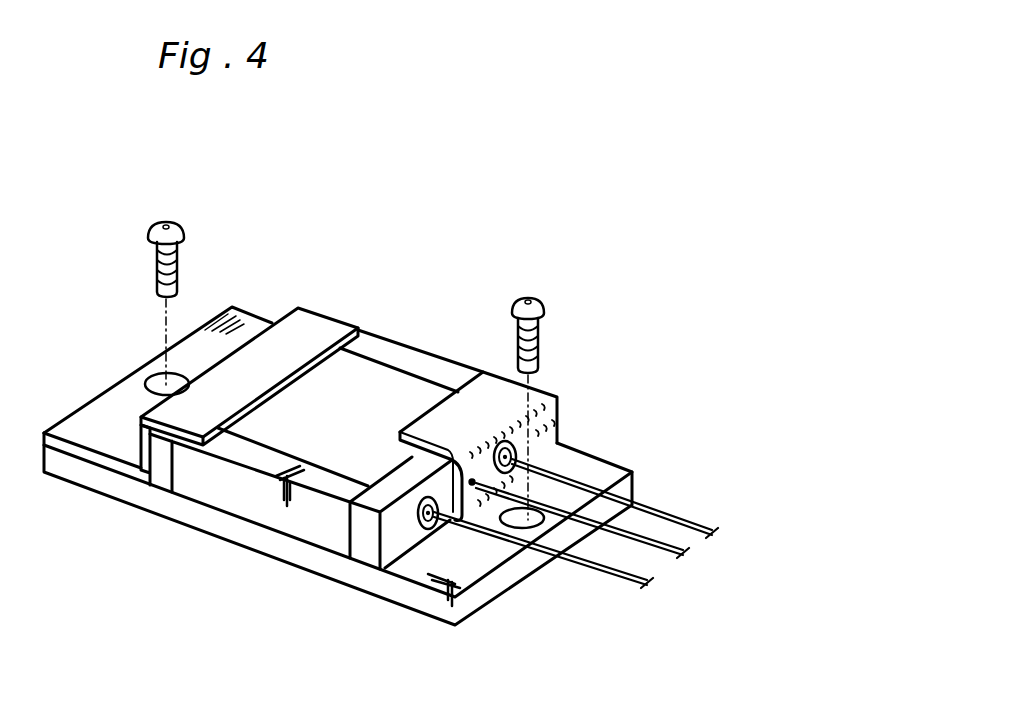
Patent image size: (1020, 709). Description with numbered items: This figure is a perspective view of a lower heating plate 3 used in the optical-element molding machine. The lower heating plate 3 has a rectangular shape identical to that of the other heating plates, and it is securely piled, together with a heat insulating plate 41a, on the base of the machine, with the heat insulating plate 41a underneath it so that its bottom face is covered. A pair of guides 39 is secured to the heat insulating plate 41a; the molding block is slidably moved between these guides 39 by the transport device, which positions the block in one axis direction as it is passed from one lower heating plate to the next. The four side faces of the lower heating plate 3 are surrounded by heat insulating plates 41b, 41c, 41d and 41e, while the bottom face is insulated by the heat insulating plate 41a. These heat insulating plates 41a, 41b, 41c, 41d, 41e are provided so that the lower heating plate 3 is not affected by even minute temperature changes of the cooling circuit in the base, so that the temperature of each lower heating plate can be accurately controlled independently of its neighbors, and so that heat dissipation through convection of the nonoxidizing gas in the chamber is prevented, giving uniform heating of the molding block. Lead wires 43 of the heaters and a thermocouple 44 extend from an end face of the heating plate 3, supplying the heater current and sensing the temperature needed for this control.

The lower heating plate 3 is at (352, 383).
The guides 39 is at (307, 322).
The heat insulating plate 41a is at (222, 527).
The heat insulating plate 41b is at (307, 517).
The heat insulating plate 41c is at (412, 365).
The heat insulating plate 41d is at (158, 472).
The heat insulating plate 41e is at (370, 550).
The lead wires 43 is at (678, 512).
The thermocouple 44 is at (650, 548).